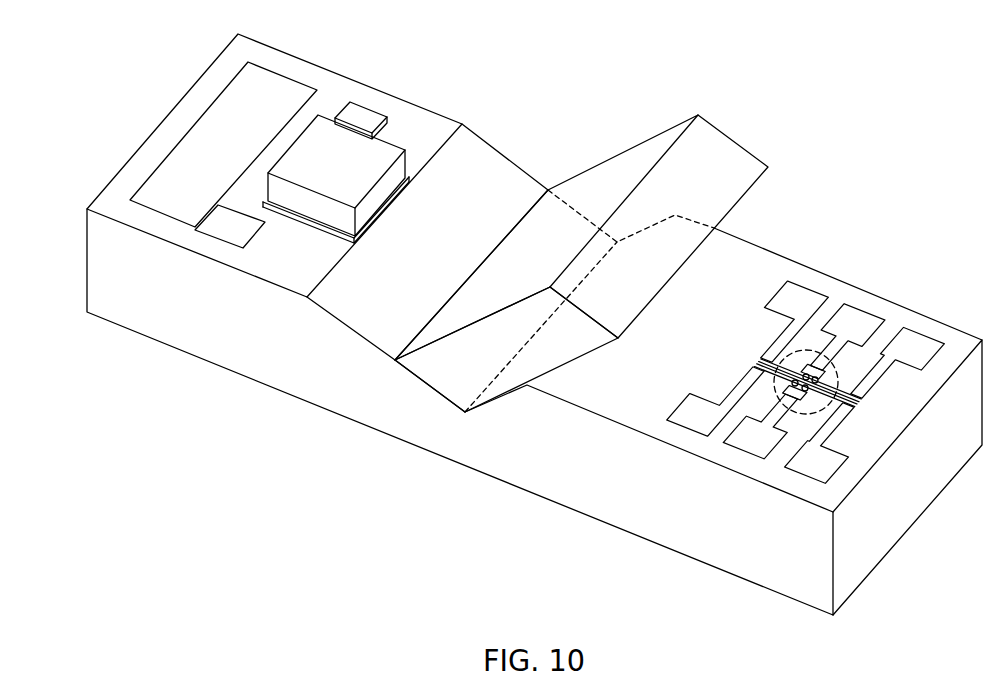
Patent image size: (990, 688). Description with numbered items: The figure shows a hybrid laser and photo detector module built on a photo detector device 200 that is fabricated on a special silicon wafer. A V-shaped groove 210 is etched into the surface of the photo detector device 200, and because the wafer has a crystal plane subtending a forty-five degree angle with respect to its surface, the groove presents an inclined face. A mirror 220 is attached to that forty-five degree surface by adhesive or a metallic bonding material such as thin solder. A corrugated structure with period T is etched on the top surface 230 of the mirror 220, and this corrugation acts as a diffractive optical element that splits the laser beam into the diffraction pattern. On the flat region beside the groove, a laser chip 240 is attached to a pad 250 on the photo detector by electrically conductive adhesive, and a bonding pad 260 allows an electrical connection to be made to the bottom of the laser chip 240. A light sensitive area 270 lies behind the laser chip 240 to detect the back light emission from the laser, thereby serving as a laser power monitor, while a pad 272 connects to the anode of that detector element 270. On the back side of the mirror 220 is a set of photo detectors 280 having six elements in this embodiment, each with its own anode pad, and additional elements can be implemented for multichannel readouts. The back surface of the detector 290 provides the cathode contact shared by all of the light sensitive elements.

The photo detector device 200 is at (534, 324).
The V-shaped groove 210 is at (486, 142).
The mirror 220 is at (713, 123).
The top surface of the mirror 230 is at (460, 328).
The laser chip 240 is at (388, 152).
The pad 250 is at (310, 225).
The bonding pad 260 is at (357, 116).
The light sensitive area 270 is at (172, 193).
The pad 272 is at (230, 230).
The set of photo detectors 280 is at (840, 382).
The back surface of the detector 290 is at (464, 467).